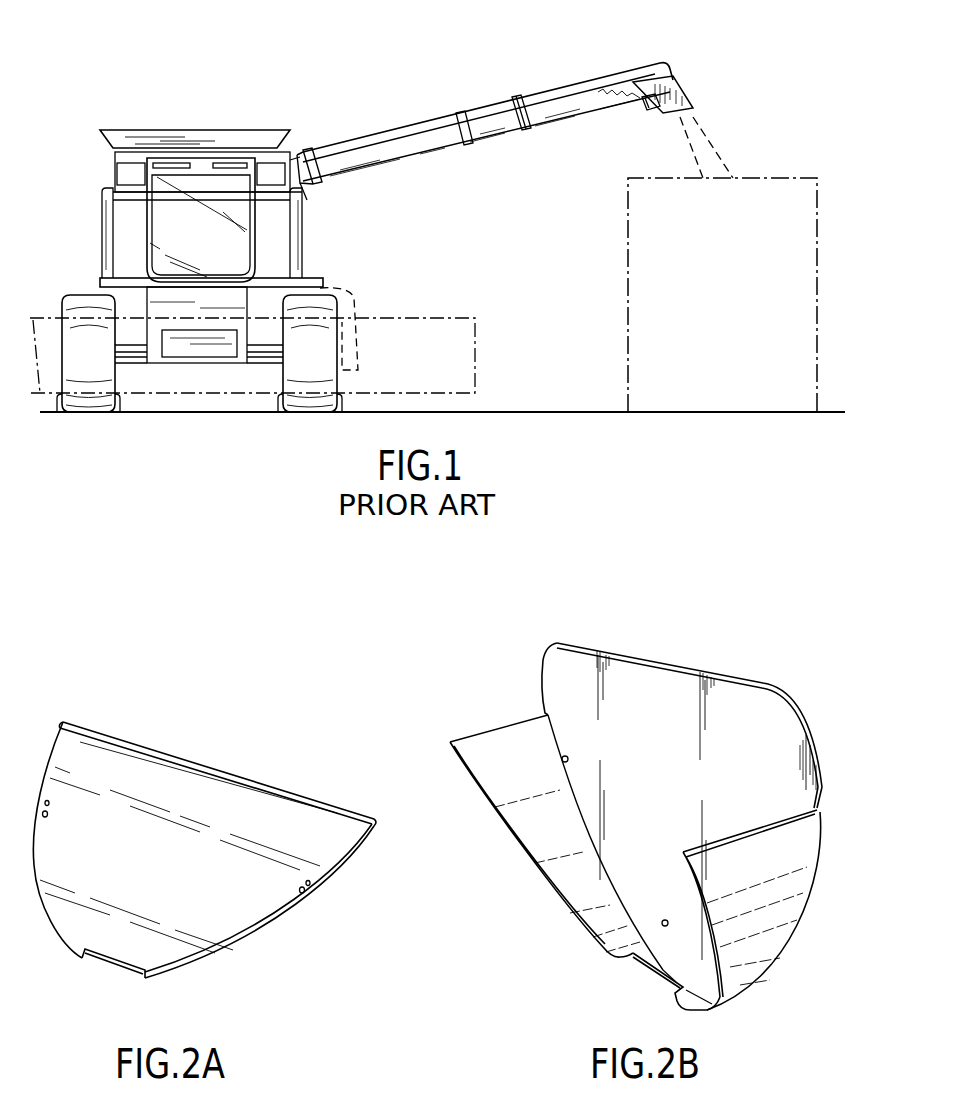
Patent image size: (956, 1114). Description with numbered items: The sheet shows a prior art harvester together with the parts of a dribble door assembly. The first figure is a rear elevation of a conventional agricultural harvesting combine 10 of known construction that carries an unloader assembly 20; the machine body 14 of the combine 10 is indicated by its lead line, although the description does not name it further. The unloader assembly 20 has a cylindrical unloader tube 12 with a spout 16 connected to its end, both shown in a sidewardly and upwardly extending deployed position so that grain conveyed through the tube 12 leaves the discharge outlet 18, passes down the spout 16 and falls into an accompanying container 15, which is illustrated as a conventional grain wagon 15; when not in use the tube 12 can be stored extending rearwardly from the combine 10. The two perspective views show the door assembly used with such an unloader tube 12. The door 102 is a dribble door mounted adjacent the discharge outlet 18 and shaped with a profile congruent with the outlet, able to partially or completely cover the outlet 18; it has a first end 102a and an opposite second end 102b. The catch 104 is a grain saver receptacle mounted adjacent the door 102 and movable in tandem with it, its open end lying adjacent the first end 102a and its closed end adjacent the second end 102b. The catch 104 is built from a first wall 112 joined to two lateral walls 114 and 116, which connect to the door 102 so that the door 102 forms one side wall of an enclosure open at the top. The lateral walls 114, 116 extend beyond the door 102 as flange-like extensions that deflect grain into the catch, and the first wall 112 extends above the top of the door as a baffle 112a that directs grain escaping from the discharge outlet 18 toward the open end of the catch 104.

In FIG. 1, the agricultural harvesting combine 10 is at (252, 223).
In FIG. 1, the unloader tube 12 is at (548, 123).
In FIG. 1, the cab / vehicle body 14 is at (312, 242).
In FIG. 1, the container 15 is at (630, 295).
In FIG. 1, the spout 16 is at (682, 88).
In FIG. 1, the discharge outlet 18 is at (693, 117).
In FIG. 1, the unloader assembly 20 is at (481, 113).
In FIG. 2A, the door 102 is at (235, 868).
In FIG. 2A, the first end of the door 102a is at (372, 817).
In FIG. 2A, the second end of the door 102b is at (157, 979).
In FIG. 2B, the catch 104 is at (642, 777).
In FIG. 2B, the first wall 112 is at (677, 820).
In FIG. 2B, the flange-like extension portion or baffle 112a is at (733, 672).
In FIG. 2B, the lateral wall 114 is at (797, 917).
In FIG. 2B, the lateral wall 116 is at (492, 727).